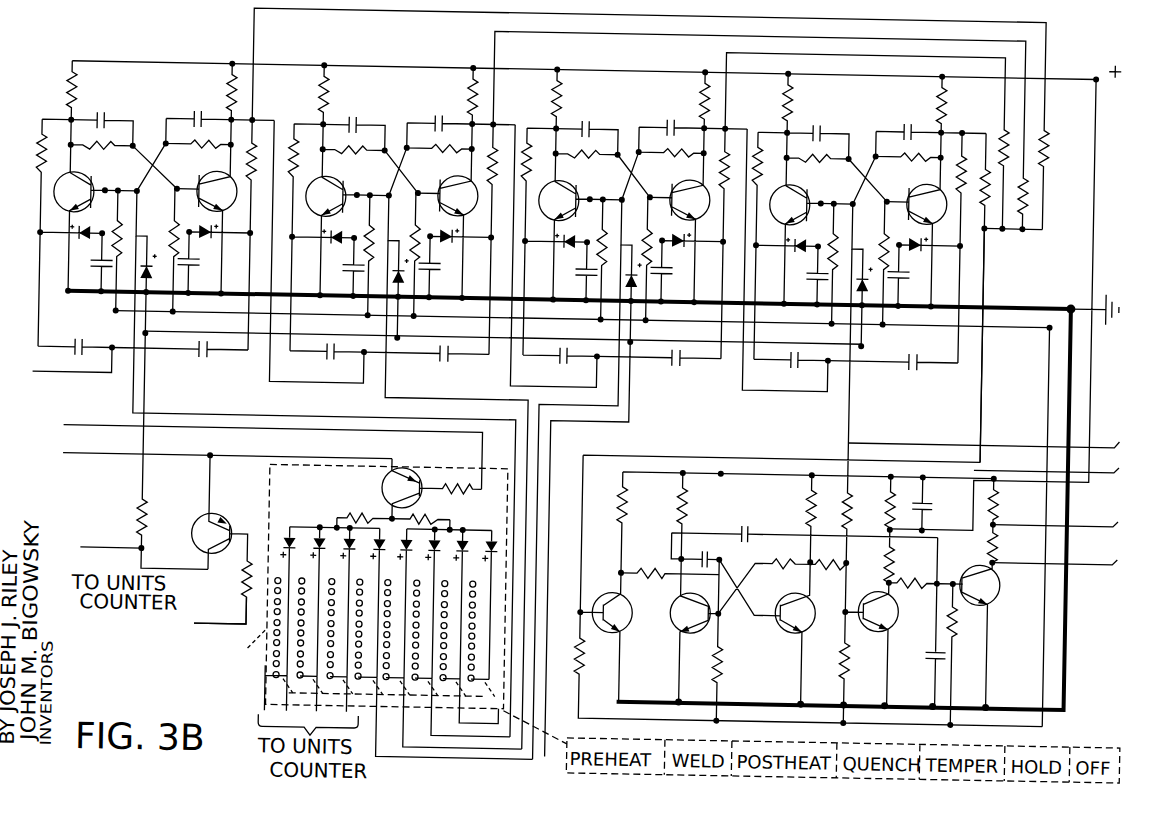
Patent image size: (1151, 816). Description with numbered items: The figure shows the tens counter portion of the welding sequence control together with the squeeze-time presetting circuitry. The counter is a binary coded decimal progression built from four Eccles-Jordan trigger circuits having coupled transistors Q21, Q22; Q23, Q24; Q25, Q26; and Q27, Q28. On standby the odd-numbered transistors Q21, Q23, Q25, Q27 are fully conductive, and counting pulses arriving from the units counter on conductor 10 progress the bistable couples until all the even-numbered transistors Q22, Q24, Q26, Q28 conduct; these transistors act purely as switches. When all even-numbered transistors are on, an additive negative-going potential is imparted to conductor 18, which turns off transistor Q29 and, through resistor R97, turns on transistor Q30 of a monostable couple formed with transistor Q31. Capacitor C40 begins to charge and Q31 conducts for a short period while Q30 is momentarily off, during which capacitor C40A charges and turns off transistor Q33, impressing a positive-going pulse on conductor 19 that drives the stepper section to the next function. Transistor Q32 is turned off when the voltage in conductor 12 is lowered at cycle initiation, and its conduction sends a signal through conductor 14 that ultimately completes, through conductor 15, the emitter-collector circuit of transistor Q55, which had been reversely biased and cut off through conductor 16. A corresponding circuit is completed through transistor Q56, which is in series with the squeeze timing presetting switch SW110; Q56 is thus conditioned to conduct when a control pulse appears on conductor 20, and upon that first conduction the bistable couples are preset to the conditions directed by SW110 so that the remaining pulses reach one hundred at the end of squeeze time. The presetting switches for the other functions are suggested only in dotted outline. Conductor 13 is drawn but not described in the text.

The conductor 10 is at (61, 363).
The conductor 12 is at (996, 431).
The output line 13 is at (1068, 513).
The conductor 14 is at (1059, 461).
The conductor 15 is at (214, 451).
The conductor 16 is at (220, 610).
The conductor 18 is at (981, 292).
The conductor 19 is at (1067, 554).
The conductor 20 is at (260, 450).
The transistor Q21 is at (96, 208).
The transistor Q22 is at (217, 204).
The transistor Q23 is at (348, 211).
The transistor Q24 is at (458, 209).
The transistor Q25 is at (581, 215).
The transistor Q26 is at (690, 213).
The transistor Q27 is at (812, 219).
The transistor Q28 is at (928, 217).
The transistor Q29 is at (650, 593).
The transistor Q30 is at (672, 612).
The transistor Q31 is at (782, 621).
The transistor Q32 is at (898, 612).
The transistor Q33 is at (1000, 590).
The transistor Q55 is at (236, 513).
The transistor Q56 is at (420, 466).
The resistor R97 is at (670, 561).
The capacitor C40 is at (701, 553).
The capacitor C40A is at (755, 520).
The squeeze timing presetting switch SW110 is at (365, 610).